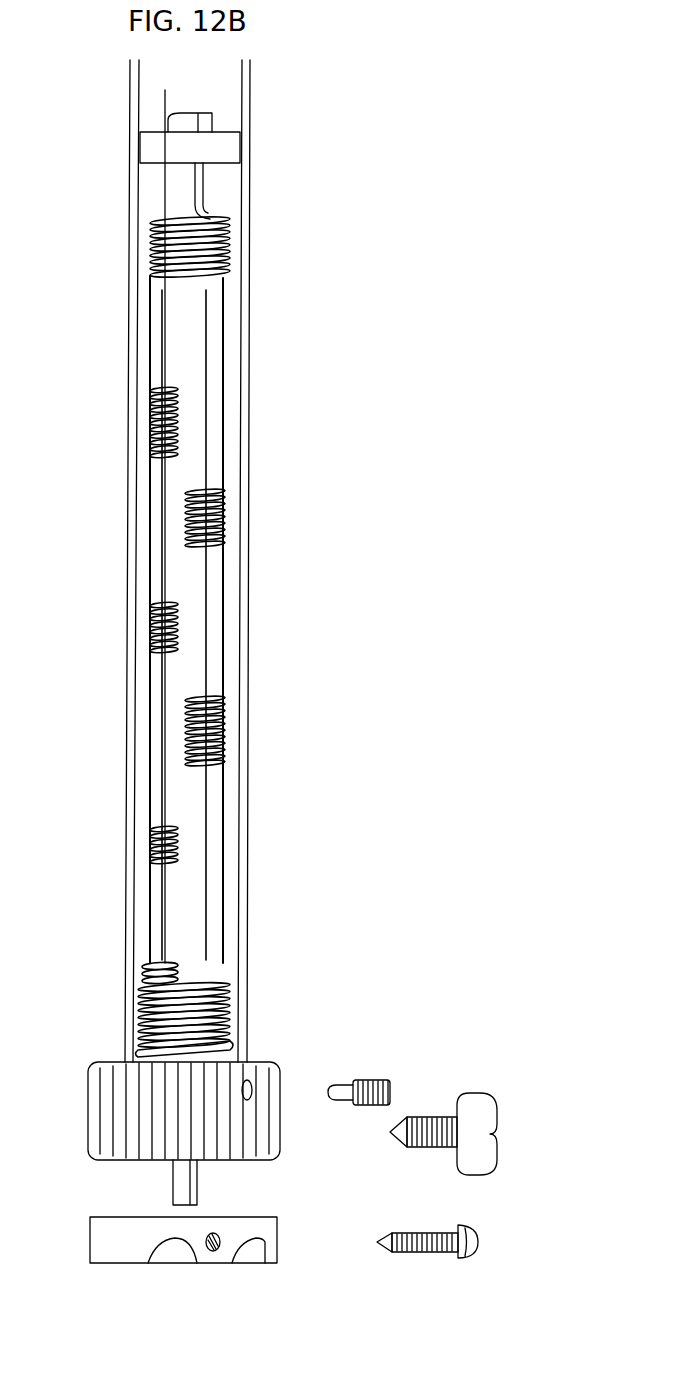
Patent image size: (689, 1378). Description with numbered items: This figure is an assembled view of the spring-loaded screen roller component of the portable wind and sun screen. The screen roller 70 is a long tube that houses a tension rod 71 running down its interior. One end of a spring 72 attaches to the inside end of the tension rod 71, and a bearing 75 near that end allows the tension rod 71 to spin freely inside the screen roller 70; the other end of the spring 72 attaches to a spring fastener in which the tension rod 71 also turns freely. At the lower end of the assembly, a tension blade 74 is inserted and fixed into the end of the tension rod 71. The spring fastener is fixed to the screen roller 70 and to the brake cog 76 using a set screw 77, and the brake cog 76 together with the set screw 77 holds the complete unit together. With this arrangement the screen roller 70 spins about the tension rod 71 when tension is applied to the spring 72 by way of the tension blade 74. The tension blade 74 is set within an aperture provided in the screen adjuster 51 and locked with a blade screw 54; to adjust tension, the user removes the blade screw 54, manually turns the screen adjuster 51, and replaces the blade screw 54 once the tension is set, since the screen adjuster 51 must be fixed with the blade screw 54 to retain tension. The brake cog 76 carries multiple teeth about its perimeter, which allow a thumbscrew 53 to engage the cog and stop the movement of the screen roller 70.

The screen roller 70 is at (250, 95).
The bearing 75 is at (155, 147).
The tension rod 71 is at (177, 193).
The spring 72 is at (230, 245).
The brake cog 76 is at (255, 1073).
The tension blade 74 is at (173, 1182).
The screen adjuster 51 is at (142, 1252).
The set screw 77 is at (372, 1085).
The thumbscrew 53 is at (473, 1105).
The blade screw 54 is at (415, 1250).